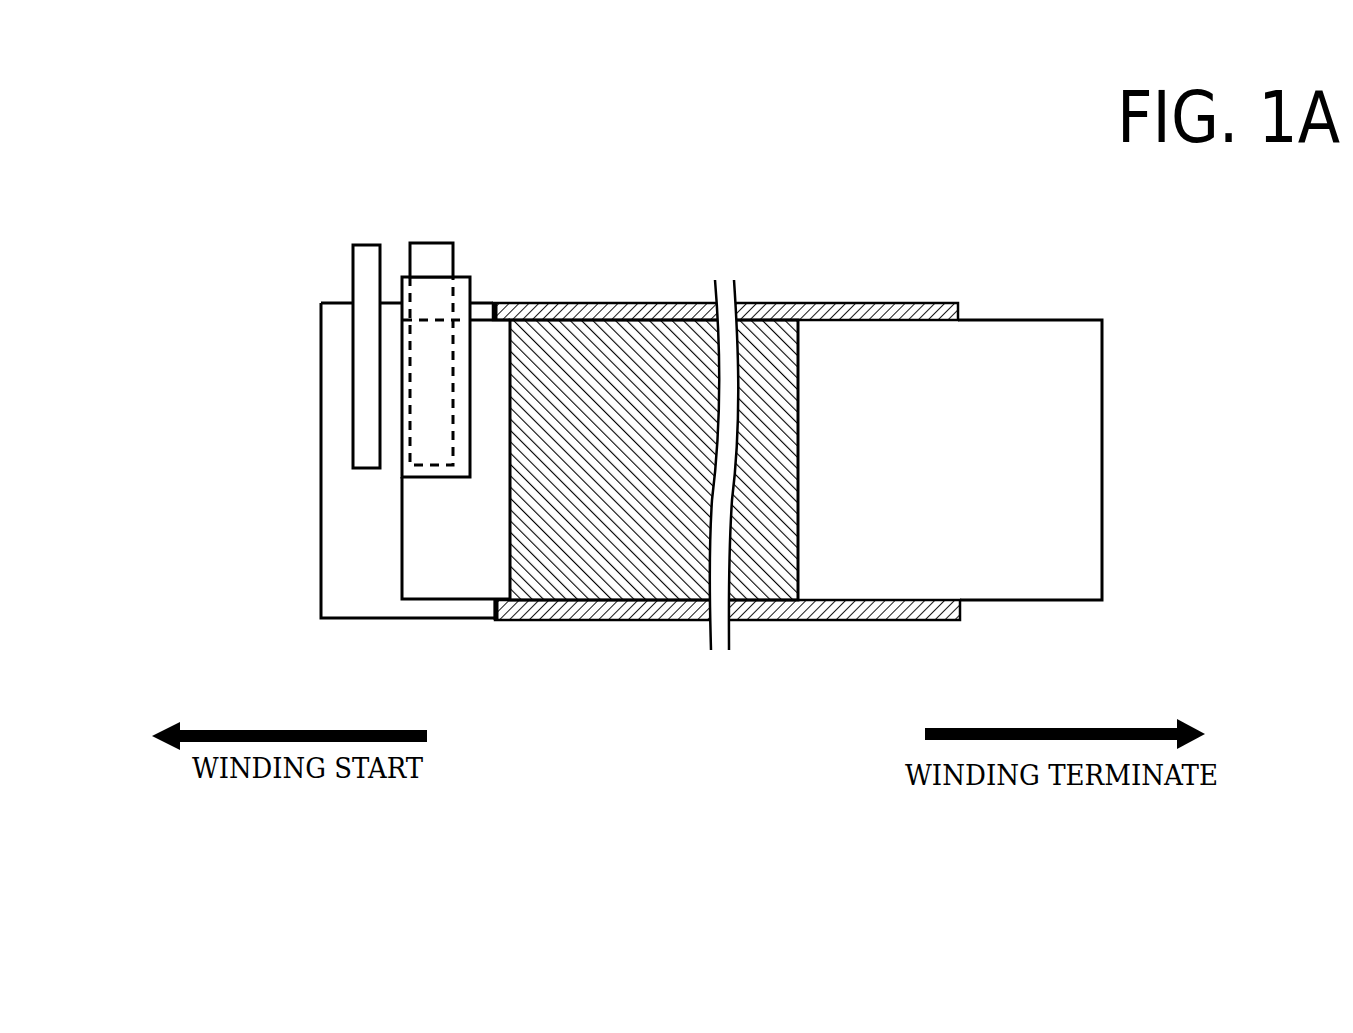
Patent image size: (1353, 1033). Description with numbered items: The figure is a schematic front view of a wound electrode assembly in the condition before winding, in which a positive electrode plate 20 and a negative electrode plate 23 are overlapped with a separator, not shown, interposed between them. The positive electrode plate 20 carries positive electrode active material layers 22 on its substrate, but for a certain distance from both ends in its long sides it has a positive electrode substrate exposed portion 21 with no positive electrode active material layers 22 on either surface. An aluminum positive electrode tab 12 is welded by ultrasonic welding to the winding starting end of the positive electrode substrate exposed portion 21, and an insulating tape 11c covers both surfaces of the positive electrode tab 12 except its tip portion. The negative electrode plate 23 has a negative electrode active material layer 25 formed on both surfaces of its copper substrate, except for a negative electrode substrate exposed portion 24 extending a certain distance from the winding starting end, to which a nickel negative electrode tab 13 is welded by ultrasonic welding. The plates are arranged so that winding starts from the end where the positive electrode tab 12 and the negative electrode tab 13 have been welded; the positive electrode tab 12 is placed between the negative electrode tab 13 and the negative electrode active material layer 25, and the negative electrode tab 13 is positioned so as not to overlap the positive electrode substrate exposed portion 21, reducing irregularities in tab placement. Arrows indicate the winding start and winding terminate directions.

The insulating tape 11c is at (462, 290).
The positive electrode tab 12 is at (435, 265).
The negative electrode tab 13 is at (363, 262).
The positive electrode plate 20 is at (827, 429).
The positive electrode substrate exposed portion 21 is at (492, 337).
The positive electrode active material layer 22 is at (630, 345).
The negative electrode plate 23 is at (322, 568).
The negative electrode substrate exposed portion 24 is at (360, 520).
The negative electrode active material layer 25 is at (815, 300).